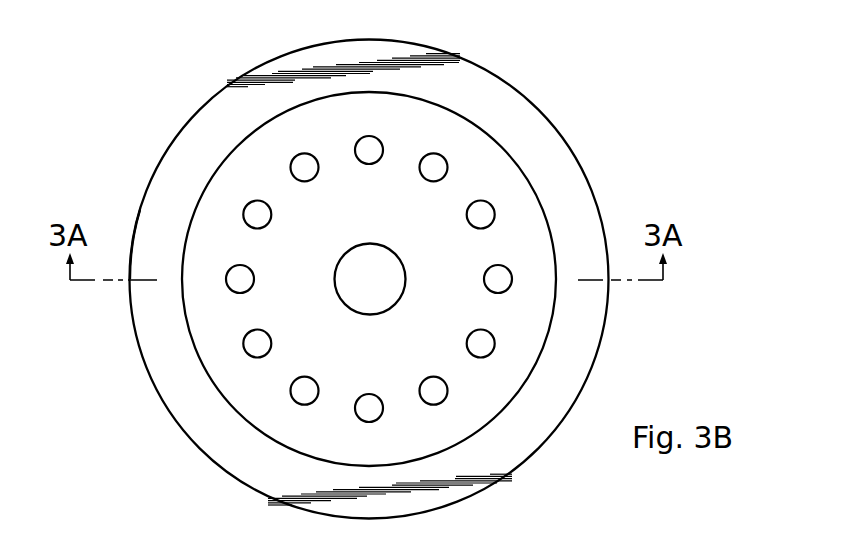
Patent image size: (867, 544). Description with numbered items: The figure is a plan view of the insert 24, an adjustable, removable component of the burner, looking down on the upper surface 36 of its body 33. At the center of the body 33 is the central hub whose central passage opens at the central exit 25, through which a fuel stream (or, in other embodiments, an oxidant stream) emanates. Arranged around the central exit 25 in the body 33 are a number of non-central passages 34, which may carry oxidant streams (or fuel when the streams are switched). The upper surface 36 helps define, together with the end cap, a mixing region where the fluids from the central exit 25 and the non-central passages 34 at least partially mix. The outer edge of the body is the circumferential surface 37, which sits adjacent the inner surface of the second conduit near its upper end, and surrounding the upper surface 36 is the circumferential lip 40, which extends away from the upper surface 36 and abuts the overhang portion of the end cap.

The insert 24 is at (557, 105).
The central exit 25 is at (365, 268).
The body 33 is at (247, 388).
The non-central passages 34 is at (291, 162).
The upper surface 36 is at (423, 136).
The circumferential surface 37 is at (142, 358).
The circumferential lip 40 is at (167, 195).